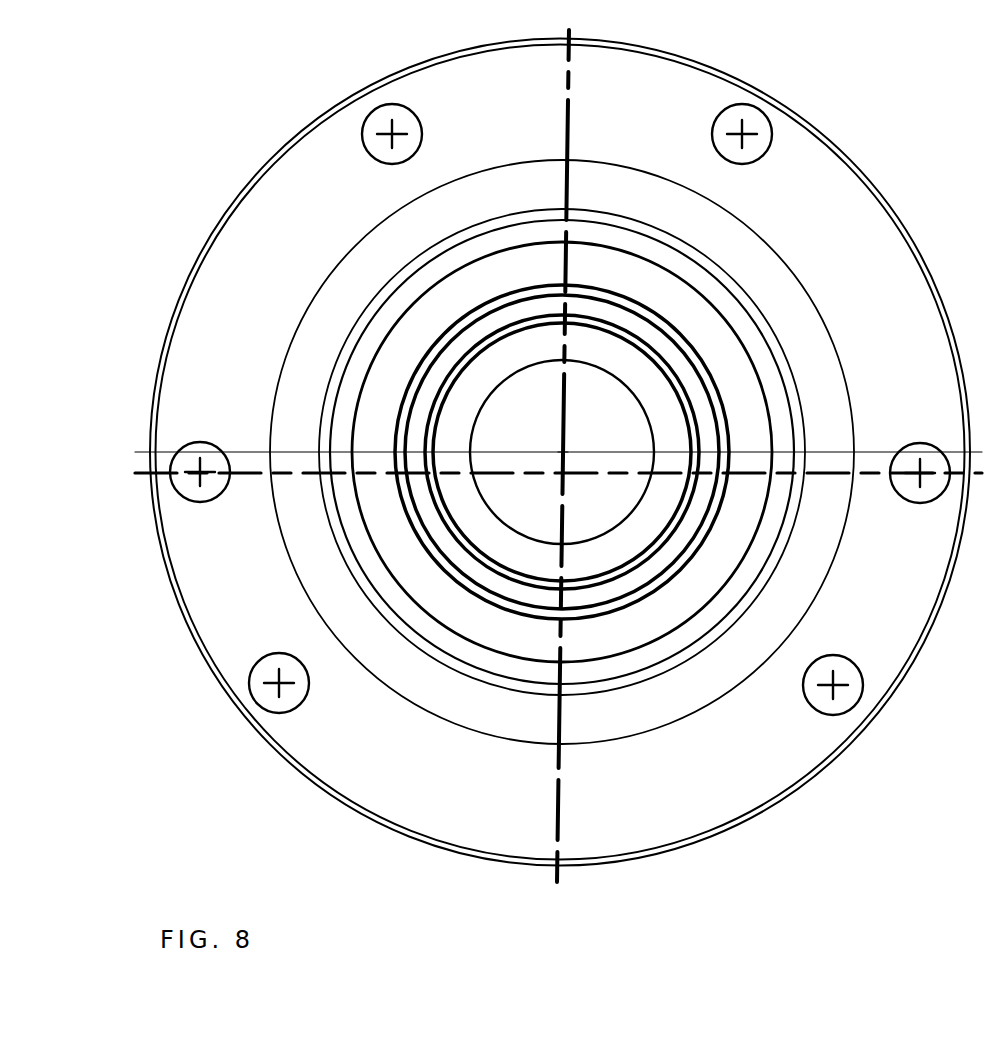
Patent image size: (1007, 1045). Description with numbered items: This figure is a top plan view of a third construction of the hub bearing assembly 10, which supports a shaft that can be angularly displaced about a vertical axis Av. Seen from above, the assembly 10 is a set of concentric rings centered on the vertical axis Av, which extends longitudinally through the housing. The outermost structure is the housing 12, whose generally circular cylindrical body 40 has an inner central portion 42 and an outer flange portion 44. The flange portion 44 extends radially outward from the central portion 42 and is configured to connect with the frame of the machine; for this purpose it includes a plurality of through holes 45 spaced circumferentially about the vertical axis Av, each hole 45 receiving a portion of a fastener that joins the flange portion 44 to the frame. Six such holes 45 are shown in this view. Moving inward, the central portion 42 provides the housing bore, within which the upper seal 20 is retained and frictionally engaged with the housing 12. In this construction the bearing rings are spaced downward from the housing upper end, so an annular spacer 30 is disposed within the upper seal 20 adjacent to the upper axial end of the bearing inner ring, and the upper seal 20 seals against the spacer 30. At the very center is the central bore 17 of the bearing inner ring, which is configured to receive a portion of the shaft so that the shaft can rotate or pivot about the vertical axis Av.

The hub bearing assembly 10 is at (178, 74).
The housing 12 is at (122, 670).
The central bore 17 is at (500, 382).
The upper seal 20 is at (700, 377).
The annular spacer 30 is at (653, 367).
The circular cylindrical body 40 is at (168, 307).
The inner central portion 42 is at (322, 368).
The outer flange portion 44 is at (230, 213).
The through holes 45 is at (764, 113).
The vertical axis Av is at (564, 452).